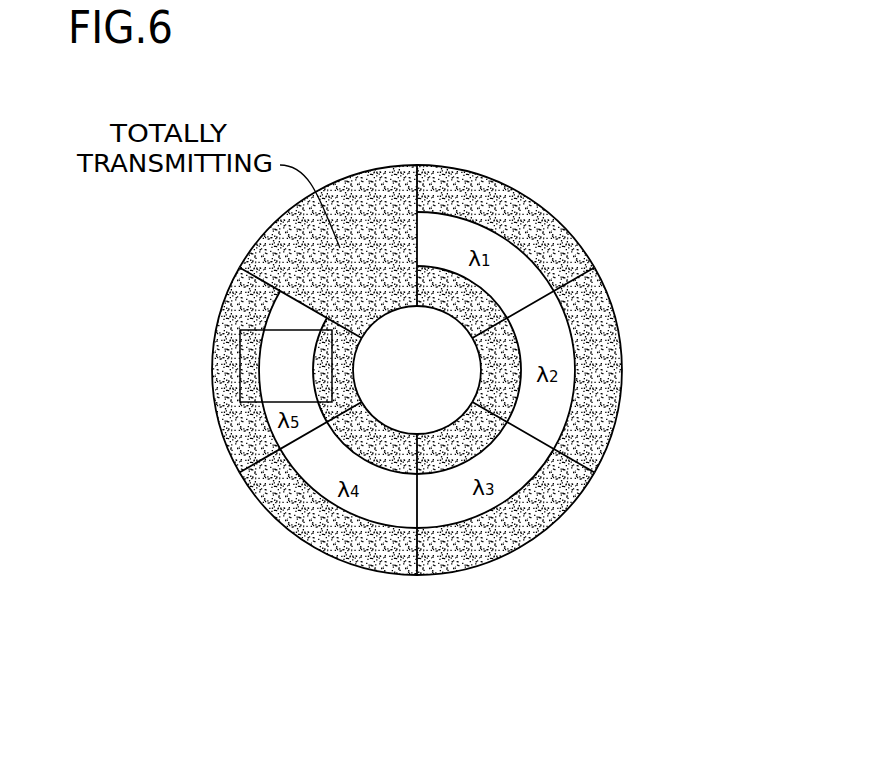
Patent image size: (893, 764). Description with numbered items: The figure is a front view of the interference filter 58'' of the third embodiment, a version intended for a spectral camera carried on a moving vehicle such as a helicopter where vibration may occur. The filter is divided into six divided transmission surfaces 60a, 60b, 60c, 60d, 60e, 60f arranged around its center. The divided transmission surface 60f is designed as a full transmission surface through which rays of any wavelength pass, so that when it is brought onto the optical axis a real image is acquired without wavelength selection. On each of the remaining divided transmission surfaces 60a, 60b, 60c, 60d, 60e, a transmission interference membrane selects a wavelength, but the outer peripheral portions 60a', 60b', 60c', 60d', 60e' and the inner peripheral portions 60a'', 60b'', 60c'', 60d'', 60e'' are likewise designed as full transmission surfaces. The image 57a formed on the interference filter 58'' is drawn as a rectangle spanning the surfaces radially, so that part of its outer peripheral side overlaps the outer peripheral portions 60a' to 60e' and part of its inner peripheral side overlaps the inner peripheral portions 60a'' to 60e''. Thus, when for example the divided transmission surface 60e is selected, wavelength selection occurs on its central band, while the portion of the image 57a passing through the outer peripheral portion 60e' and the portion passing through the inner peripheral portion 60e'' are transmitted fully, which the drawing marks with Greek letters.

The interference filter 58'' is at (425, 341).
The divided transmission surface 60a is at (545, 226).
The outer peripheral portion 60a' is at (522, 184).
The inner peripheral portion 60a'' is at (451, 206).
The divided transmission surface 60b is at (645, 370).
The outer peripheral portion 60b' is at (669, 370).
The inner peripheral portion 60b'' is at (602, 333).
The divided transmission surface 60c is at (535, 516).
The outer peripheral portion 60c' is at (550, 524).
The inner peripheral portion 60c'' is at (502, 506).
The divided transmission surface 60d is at (272, 514).
The outer peripheral portion 60d' is at (280, 524).
The inner peripheral portion 60d'' is at (335, 506).
The divided transmission surface 60e is at (207, 371).
The outer peripheral portion 60e' is at (177, 339).
The inner peripheral portion 60e'' is at (383, 370).
The divided transmission surface 60f is at (357, 198).
The image 57a is at (280, 358).